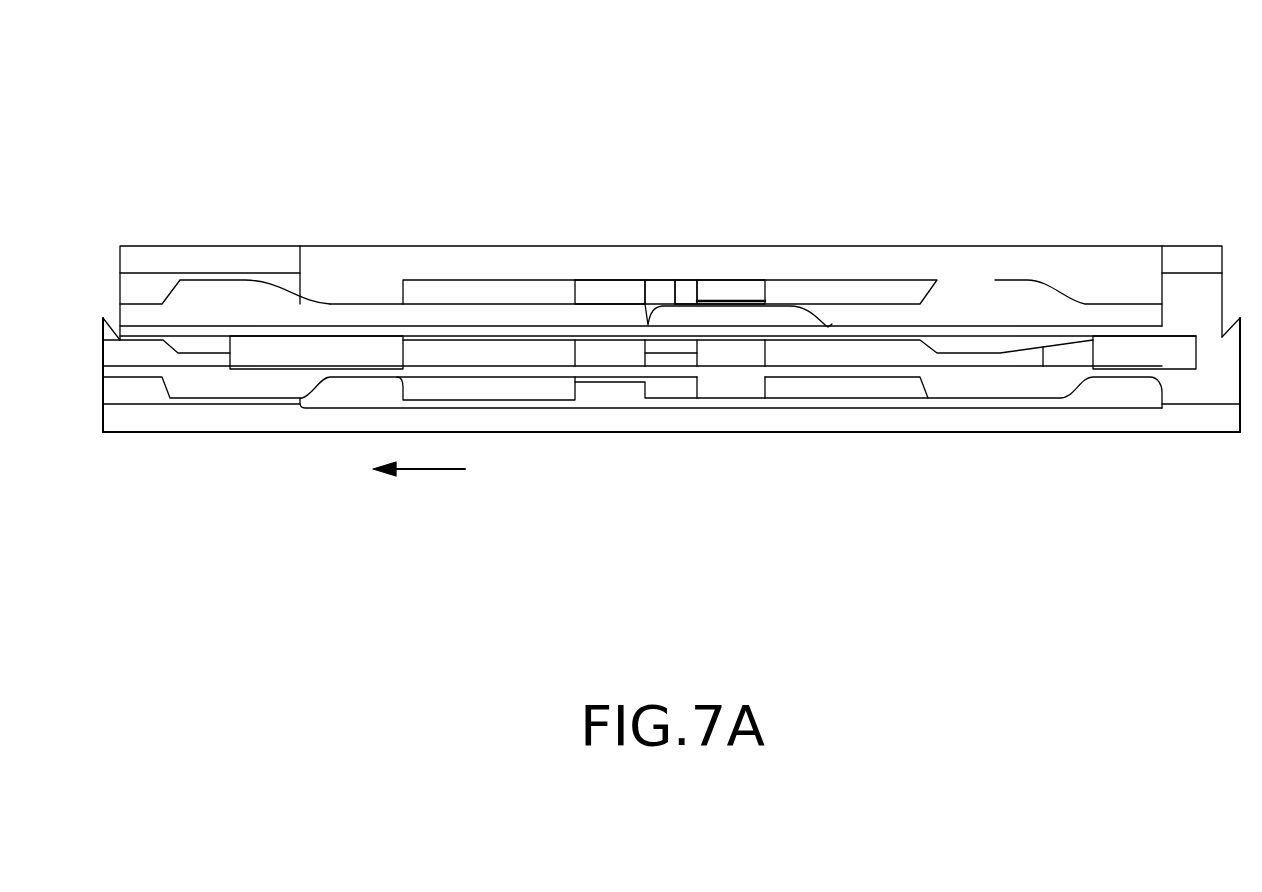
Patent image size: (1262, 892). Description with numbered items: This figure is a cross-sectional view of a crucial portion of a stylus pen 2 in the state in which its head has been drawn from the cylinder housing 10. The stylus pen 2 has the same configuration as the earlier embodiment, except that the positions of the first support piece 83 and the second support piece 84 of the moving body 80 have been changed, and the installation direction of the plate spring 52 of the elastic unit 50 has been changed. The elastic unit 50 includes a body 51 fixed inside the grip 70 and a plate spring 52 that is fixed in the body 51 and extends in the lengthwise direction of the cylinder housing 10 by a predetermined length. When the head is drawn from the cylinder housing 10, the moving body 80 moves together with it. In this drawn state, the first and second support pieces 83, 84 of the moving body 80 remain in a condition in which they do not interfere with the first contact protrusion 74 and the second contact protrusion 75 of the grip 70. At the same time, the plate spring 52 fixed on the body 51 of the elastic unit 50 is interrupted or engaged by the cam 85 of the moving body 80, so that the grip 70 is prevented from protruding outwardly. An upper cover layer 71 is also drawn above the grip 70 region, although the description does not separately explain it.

The stylus pen 2 is at (1118, 94).
The cylinder housing 10 is at (187, 243).
The elastic unit 50 is at (623, 288).
The body 51 is at (597, 288).
The plate spring 52 is at (682, 289).
The grip 70 is at (857, 242).
The cover layer 71 is at (740, 247).
The first contact protrusion 74 is at (396, 300).
The second contact protrusion 75 is at (1158, 297).
The moving body 80 is at (490, 305).
The first support piece 83 is at (246, 296).
The second support piece 84 is at (955, 290).
The cam 85 is at (757, 285).